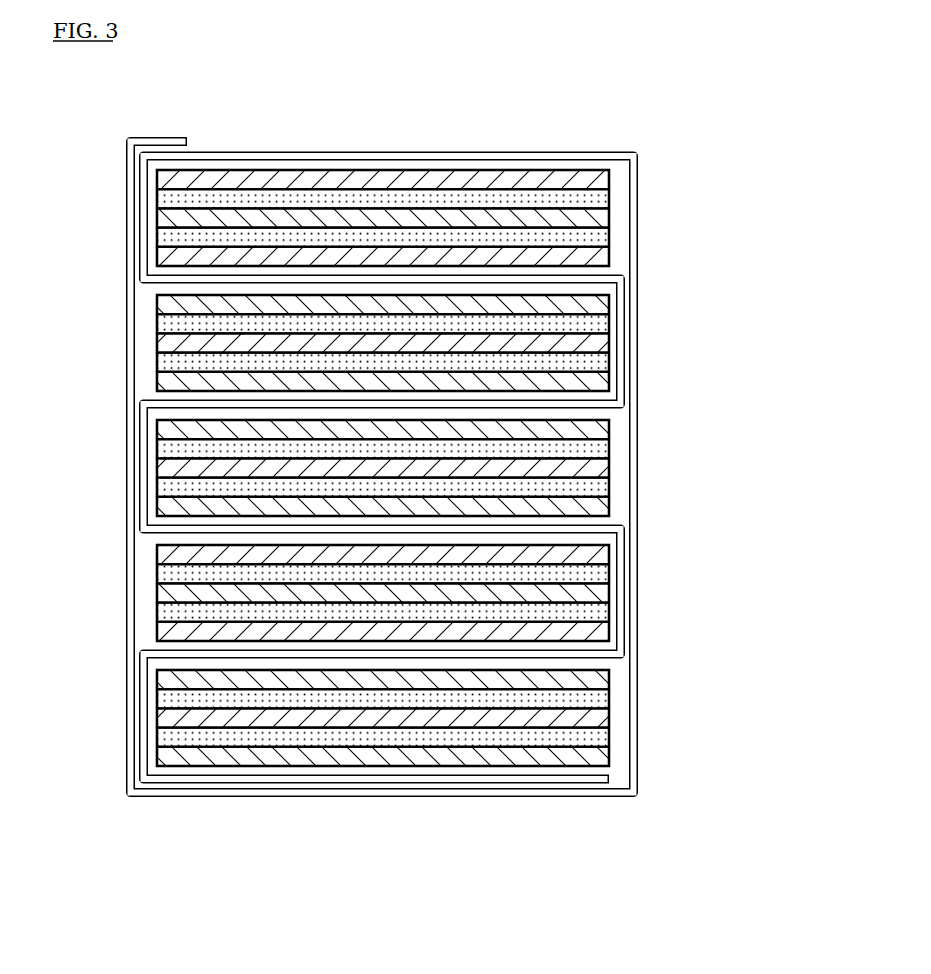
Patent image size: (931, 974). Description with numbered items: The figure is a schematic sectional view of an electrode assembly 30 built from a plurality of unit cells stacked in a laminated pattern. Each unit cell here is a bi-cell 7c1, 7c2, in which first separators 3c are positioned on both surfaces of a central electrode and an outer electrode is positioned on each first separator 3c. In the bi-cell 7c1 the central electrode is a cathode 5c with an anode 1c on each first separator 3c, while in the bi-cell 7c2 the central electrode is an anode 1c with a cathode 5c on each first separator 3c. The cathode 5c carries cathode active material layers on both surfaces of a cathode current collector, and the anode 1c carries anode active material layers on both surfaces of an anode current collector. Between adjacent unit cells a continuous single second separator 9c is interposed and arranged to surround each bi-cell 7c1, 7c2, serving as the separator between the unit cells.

The electrode assembly 30 is at (428, 436).
The second separator 9c is at (130, 300).
The bi-cell 7c1 is at (458, 405).
The bi-cell 7c2 is at (458, 530).
The anode 1c is at (425, 485).
The first separator 3c is at (425, 465).
The cathode 5c is at (425, 446).